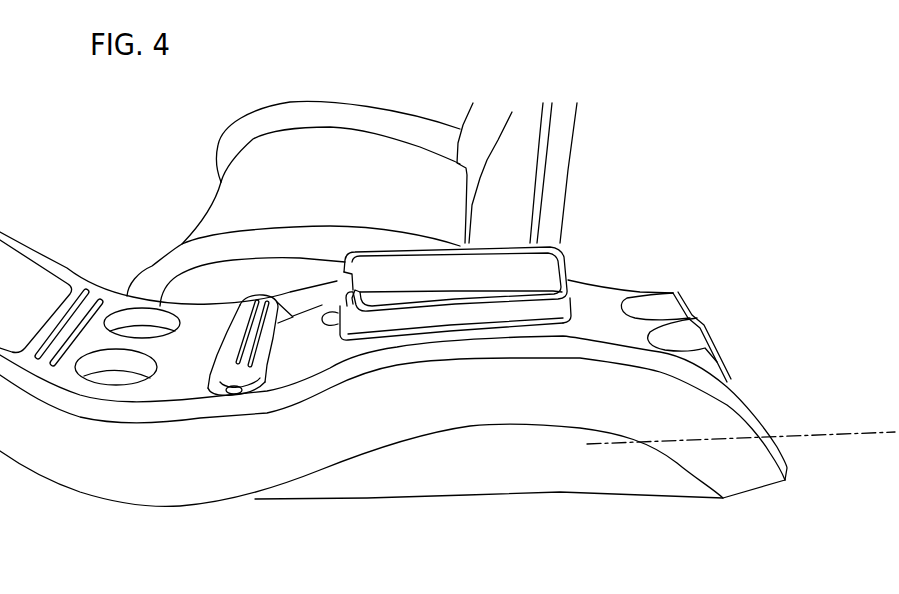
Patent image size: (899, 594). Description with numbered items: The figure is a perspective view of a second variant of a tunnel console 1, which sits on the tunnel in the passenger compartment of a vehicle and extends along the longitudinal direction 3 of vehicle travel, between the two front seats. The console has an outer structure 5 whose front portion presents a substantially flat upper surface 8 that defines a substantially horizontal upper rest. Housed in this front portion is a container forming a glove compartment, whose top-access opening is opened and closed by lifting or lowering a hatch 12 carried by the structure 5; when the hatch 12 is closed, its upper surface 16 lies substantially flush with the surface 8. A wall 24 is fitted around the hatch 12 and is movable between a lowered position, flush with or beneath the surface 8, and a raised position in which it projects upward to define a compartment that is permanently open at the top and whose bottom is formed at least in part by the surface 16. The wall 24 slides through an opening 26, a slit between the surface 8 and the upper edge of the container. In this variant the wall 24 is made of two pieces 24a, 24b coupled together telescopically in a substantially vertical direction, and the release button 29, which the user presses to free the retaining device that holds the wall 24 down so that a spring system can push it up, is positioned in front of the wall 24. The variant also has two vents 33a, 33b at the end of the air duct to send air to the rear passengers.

The tunnel console 1 is at (765, 244).
The longitudinal direction 3 is at (823, 437).
The outer structure 5 is at (617, 277).
The upper surface 8 is at (591, 298).
The hatch 12 is at (437, 298).
The upper surface of the hatch 16 is at (500, 273).
The wall 24 is at (556, 358).
The first wall piece 24a is at (513, 330).
The second wall piece 24b is at (430, 321).
The opening 26 is at (590, 334).
The release button 29 is at (330, 312).
The first vent 33a is at (730, 344).
The second vent 33b is at (689, 304).